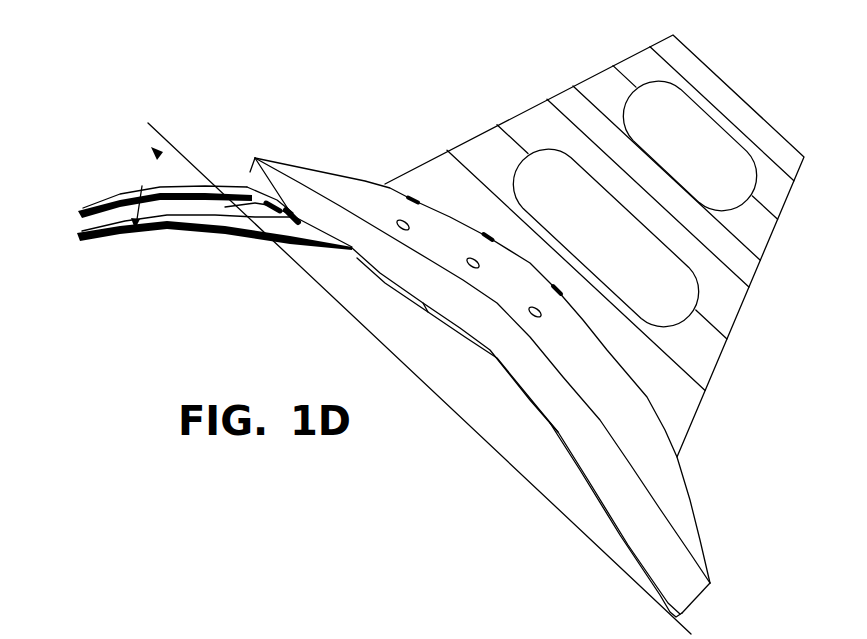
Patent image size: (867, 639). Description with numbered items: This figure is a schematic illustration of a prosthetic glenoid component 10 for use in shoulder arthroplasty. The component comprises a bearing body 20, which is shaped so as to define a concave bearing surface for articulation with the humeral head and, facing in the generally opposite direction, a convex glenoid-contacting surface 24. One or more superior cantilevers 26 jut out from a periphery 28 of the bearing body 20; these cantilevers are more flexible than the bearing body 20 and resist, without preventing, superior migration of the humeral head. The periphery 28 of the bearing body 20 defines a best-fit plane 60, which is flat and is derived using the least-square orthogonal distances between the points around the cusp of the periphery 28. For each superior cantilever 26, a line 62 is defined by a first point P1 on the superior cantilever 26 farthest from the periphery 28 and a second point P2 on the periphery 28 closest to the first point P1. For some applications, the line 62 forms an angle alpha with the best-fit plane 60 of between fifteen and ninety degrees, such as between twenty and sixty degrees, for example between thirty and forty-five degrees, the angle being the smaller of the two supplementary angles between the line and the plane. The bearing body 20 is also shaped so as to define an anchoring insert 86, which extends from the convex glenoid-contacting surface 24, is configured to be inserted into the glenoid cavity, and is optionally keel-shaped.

The prosthetic glenoid component 10 is at (388, 85).
The bearing body 20 is at (736, 534).
The convex glenoid-contacting surface 24 is at (663, 467).
The superior cantilever 26 is at (96, 209).
The periphery 28 is at (250, 172).
The best-fit plane 60 is at (190, 136).
The line 62 is at (233, 228).
The anchoring insert 86 is at (597, 88).
The first point P1 is at (80, 243).
The second point P2 is at (307, 180).